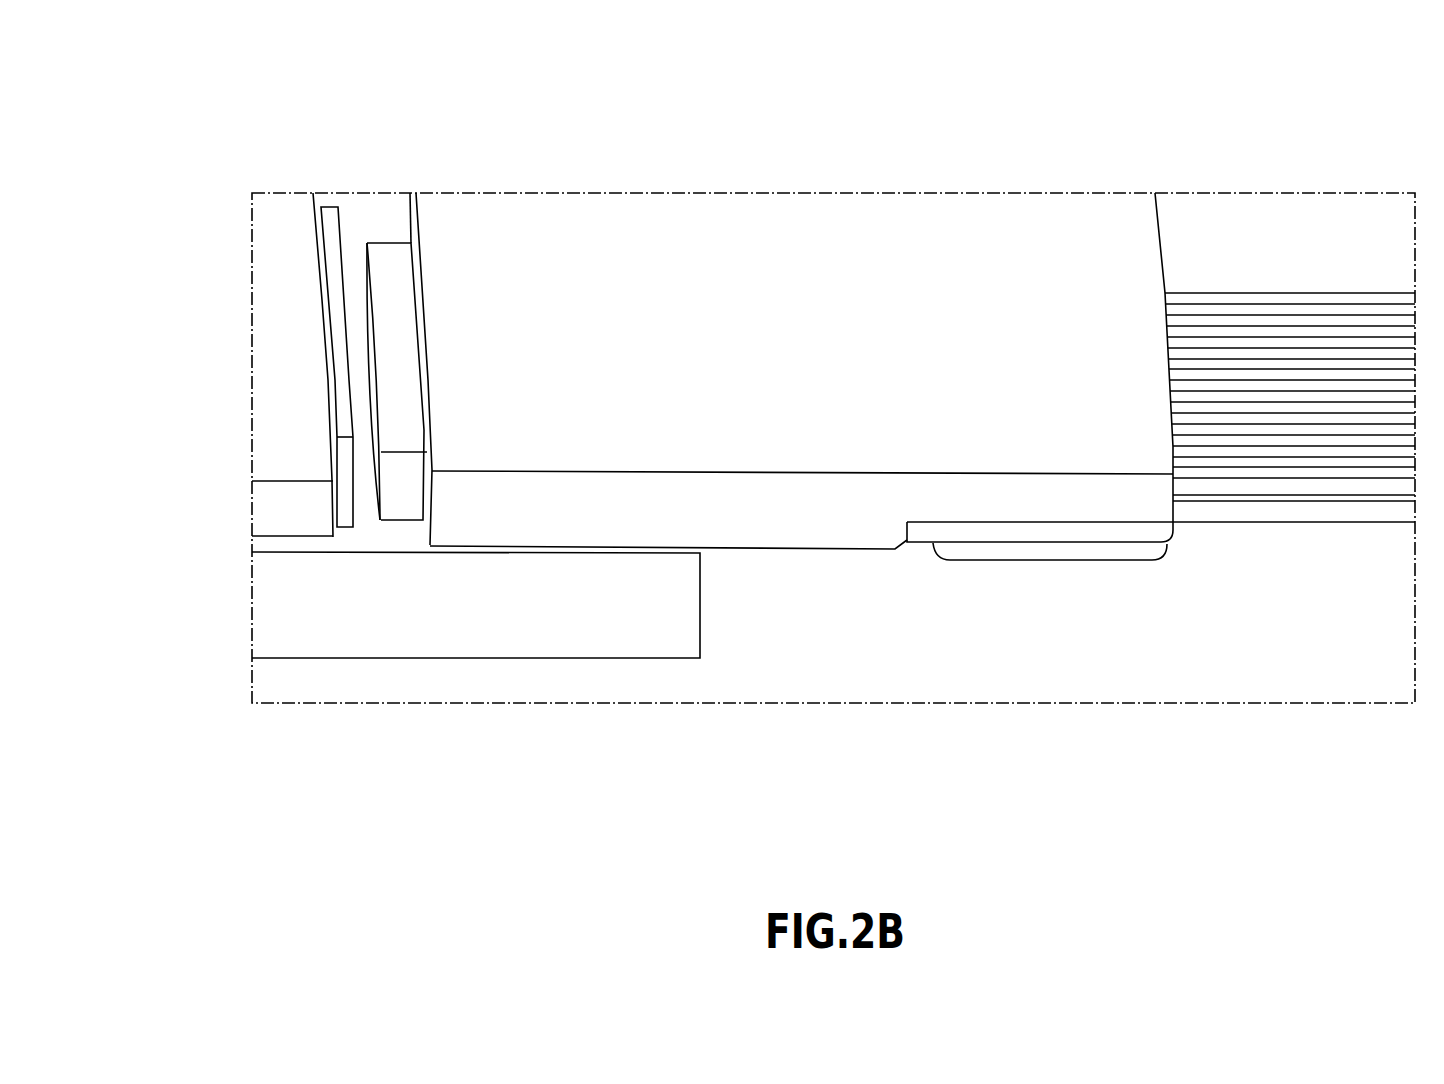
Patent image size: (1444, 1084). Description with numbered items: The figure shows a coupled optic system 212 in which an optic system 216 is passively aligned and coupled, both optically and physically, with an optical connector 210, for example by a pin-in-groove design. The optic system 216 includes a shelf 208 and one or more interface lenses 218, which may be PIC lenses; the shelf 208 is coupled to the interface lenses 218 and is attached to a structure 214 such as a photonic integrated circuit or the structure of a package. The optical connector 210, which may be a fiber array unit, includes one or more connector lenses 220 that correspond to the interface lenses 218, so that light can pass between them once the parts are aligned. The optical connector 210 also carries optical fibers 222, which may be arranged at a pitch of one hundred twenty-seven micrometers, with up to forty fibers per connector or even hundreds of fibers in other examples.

The shelf 208 is at (418, 642).
The optical connector 210 is at (767, 180).
The coupled optic system 212 is at (345, 97).
The structure 214 is at (263, 453).
The optic system 216 is at (285, 183).
The interface lens 218 is at (343, 525).
The connector lens 220 is at (405, 343).
The optical fibers 222 is at (1222, 294).